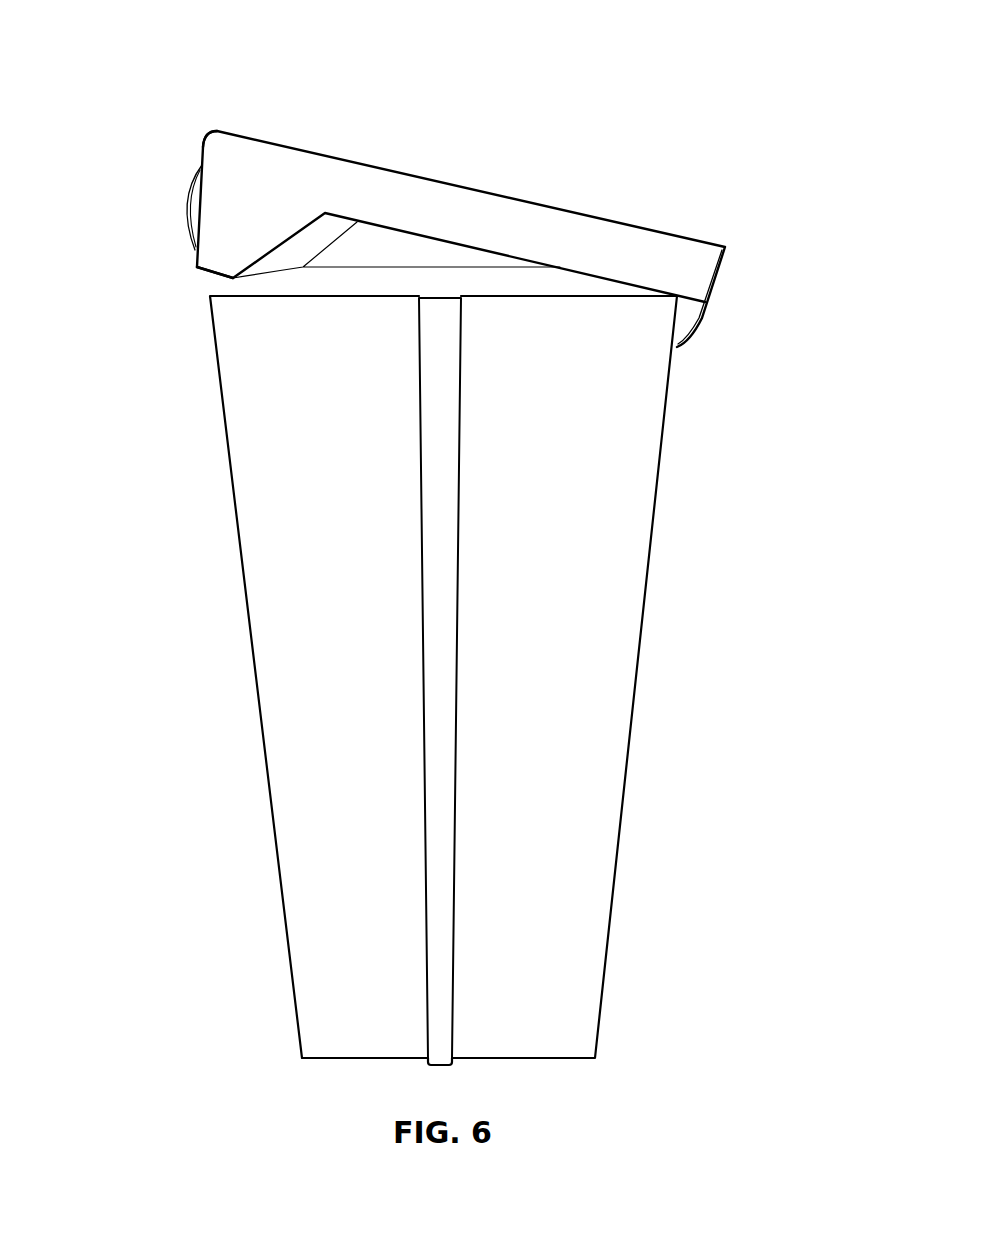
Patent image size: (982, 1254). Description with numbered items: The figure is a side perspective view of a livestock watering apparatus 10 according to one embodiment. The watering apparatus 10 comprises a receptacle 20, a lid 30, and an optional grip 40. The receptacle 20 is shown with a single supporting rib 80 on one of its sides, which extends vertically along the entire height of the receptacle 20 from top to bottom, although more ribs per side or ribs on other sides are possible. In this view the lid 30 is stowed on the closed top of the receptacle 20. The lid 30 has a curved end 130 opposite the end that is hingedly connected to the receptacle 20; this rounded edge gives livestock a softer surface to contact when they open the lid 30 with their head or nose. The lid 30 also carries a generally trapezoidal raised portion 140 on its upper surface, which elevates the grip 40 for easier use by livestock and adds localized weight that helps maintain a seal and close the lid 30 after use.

The livestock watering apparatus 10 is at (662, 173).
The receptacle 20 is at (647, 600).
The lid 30 is at (490, 188).
The grip 40 is at (183, 202).
The supporting rib 80 is at (420, 598).
The curved end 130 is at (202, 130).
The raised portion 140 is at (219, 259).